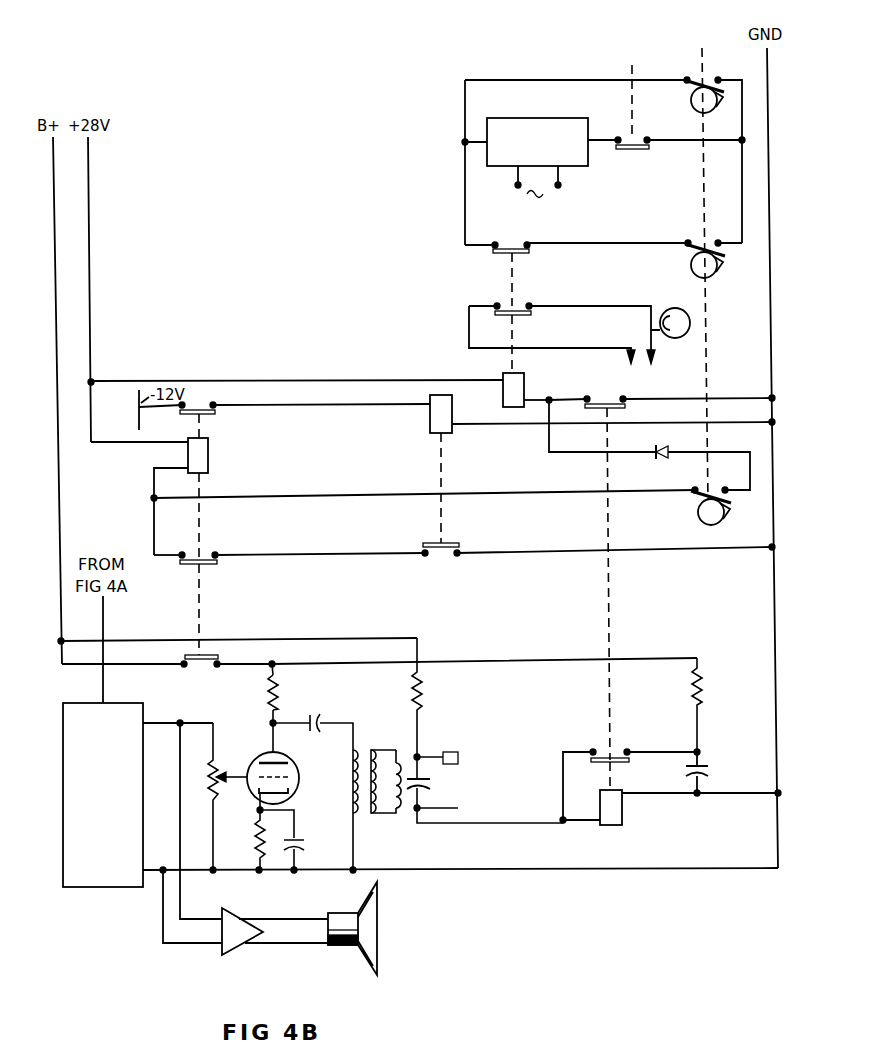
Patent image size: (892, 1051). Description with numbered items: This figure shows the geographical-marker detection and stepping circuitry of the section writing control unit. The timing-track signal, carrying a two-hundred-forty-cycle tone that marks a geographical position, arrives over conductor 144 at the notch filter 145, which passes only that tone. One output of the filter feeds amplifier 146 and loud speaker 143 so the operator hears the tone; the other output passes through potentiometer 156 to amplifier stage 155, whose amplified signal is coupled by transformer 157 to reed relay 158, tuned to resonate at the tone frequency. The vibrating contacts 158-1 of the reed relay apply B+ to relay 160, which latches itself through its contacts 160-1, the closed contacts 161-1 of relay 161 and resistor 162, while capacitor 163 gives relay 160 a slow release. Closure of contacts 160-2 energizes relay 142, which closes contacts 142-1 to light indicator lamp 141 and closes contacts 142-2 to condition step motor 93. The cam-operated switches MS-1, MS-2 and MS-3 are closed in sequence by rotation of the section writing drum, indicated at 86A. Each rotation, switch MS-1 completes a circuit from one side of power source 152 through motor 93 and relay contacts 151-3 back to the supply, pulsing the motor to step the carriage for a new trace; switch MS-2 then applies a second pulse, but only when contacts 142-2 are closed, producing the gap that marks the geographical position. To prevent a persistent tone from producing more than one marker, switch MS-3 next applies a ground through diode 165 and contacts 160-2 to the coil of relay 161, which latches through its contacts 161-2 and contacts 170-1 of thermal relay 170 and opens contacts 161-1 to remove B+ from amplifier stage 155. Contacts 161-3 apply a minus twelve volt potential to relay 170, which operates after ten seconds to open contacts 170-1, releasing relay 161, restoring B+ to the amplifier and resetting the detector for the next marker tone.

The cam shaft 86A is at (704, 39).
The step motor 93 is at (590, 150).
The source of power 152 is at (548, 187).
The relay contacts 151-3 is at (642, 138).
The cam-operated switch MS-1 is at (689, 95).
The cam-operated switch MS-2 is at (687, 259).
The switch MS-3 is at (442, 507).
The relay contacts 142-2 is at (522, 243).
The relay contacts 142-1 is at (531, 310).
The indicator lamp 141 is at (689, 338).
The relay 142 is at (524, 396).
The relay contacts 160-2 is at (625, 404).
The diode 165 is at (672, 456).
The thermal relay 170 is at (452, 400).
The relay contacts 170-1 is at (440, 557).
The relay contacts 161-3 is at (217, 411).
The relay 161 is at (208, 457).
The relay contacts 161-2 is at (216, 559).
The relay contacts 161-1 is at (215, 656).
The conductor 144 is at (103, 605).
The notch filter 145 is at (63, 765).
The potentiometer 156 is at (236, 783).
The amplifier stage 155 is at (250, 766).
The coupling transformer 157 is at (386, 751).
The reed relay 158 is at (406, 800).
The relay contacts 158-1 is at (431, 784).
The relay contacts 160-1 is at (612, 749).
The relay 160 is at (622, 812).
The resistor 162 is at (703, 681).
The capacitor 163 is at (706, 772).
The amplifier 146 is at (238, 948).
The loud speaker 143 is at (343, 946).